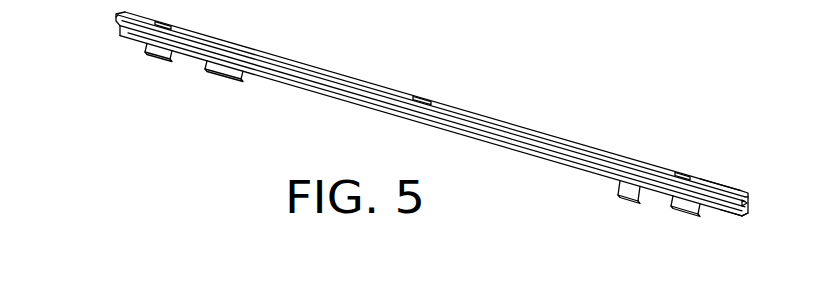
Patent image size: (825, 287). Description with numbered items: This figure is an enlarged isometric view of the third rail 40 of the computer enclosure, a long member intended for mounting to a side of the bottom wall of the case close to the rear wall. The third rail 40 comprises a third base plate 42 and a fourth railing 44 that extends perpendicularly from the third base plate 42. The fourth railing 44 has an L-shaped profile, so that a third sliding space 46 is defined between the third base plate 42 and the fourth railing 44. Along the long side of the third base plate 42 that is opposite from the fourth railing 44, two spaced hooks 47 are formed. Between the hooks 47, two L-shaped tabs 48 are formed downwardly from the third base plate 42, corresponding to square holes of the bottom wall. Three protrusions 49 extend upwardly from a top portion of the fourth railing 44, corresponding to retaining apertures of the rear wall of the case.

The third rail 40 is at (522, 108).
The third base plate 42 is at (741, 217).
The fourth railing 44 is at (728, 192).
The third sliding space 46 is at (748, 201).
The hooks 47 is at (685, 216).
The L-shaped tabs 48 is at (647, 194).
The protrusions 49 is at (688, 172).